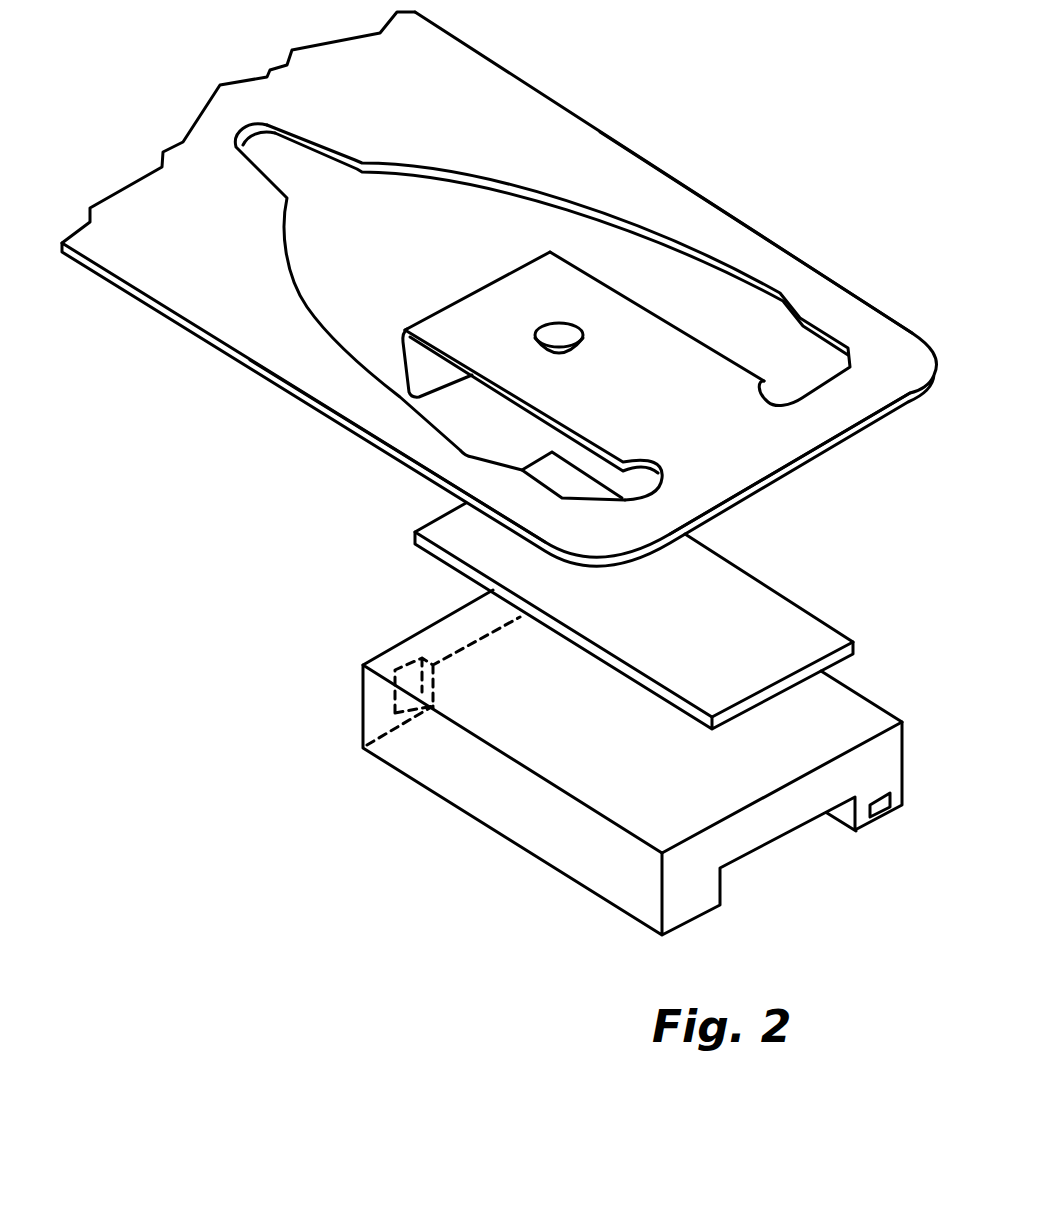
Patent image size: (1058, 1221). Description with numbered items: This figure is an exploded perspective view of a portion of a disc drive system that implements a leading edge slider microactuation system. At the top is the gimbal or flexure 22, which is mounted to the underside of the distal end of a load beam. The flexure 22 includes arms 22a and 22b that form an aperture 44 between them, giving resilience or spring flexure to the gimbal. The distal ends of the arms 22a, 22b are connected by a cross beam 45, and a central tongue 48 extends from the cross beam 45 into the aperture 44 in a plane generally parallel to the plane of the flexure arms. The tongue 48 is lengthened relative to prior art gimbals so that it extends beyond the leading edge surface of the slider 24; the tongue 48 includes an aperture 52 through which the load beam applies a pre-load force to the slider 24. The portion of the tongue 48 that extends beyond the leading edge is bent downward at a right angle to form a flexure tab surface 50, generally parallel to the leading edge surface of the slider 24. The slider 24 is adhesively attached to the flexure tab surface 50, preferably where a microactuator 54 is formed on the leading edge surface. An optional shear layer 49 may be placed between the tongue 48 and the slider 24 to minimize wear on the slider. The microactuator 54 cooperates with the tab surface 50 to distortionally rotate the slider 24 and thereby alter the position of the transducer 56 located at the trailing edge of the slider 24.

The flexure 22 is at (500, 95).
The flexure arm 22a is at (758, 252).
The flexure arm 22b is at (433, 450).
The aperture 44 is at (525, 208).
The cross beam 45 is at (768, 455).
The central tongue 48 is at (583, 376).
The flexure tab surface 50 is at (438, 370).
The aperture 52 is at (570, 322).
The shear layer 49 is at (743, 612).
The slider 24 is at (617, 759).
The microactuator 54 is at (408, 662).
The transducer 56 is at (876, 817).